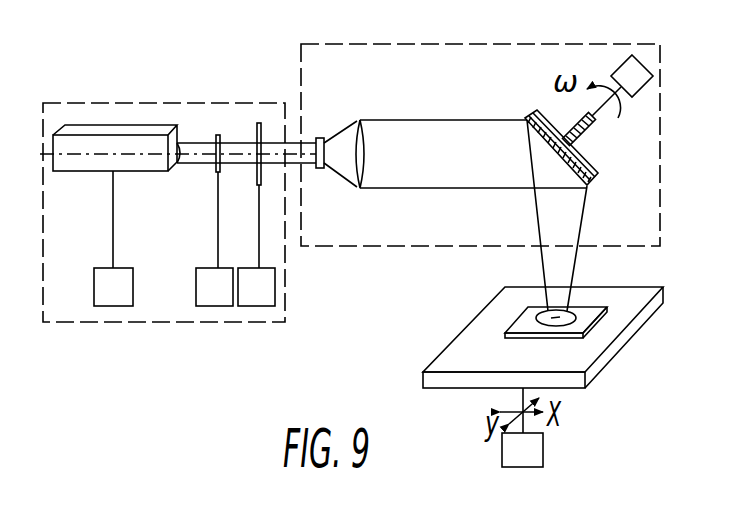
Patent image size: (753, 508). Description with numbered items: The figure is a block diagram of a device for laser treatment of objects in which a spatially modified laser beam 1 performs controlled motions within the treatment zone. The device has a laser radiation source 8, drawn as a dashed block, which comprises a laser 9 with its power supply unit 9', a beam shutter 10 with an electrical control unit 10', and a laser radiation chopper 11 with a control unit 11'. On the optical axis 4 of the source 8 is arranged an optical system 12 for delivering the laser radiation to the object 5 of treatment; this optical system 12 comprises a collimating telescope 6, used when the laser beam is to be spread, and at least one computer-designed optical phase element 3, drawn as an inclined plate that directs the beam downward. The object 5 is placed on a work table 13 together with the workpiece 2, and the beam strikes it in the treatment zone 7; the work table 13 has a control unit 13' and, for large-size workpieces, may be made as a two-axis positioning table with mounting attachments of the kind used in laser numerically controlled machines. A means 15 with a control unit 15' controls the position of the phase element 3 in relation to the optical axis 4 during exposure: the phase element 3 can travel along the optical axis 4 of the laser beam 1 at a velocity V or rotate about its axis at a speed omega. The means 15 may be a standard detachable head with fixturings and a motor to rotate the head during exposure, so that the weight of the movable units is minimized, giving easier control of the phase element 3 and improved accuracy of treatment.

The laser beam 1 is at (197, 143).
The workpiece 2 is at (520, 331).
The computer-designed optical phase element 3 is at (535, 111).
The optical axis 4 is at (50, 155).
The object of treatment 5 is at (590, 320).
The collimating telescope 6 is at (340, 120).
The beam spot 7 is at (567, 313).
The laser radiation source 8 is at (111, 101).
The laser 9 is at (115, 151).
The power supply unit 9' is at (113, 240).
The beam shutter 10 is at (199, 174).
The electrical control unit 10' is at (214, 240).
The laser radiation chopper 11 is at (243, 168).
The control unit 11' is at (256, 247).
The optical system 12 is at (297, 64).
The work table 13 is at (543, 356).
The control unit of the work table 13' is at (521, 429).
The means for positioning the phase element 15 is at (596, 140).
The control unit of the means 15' is at (646, 85).